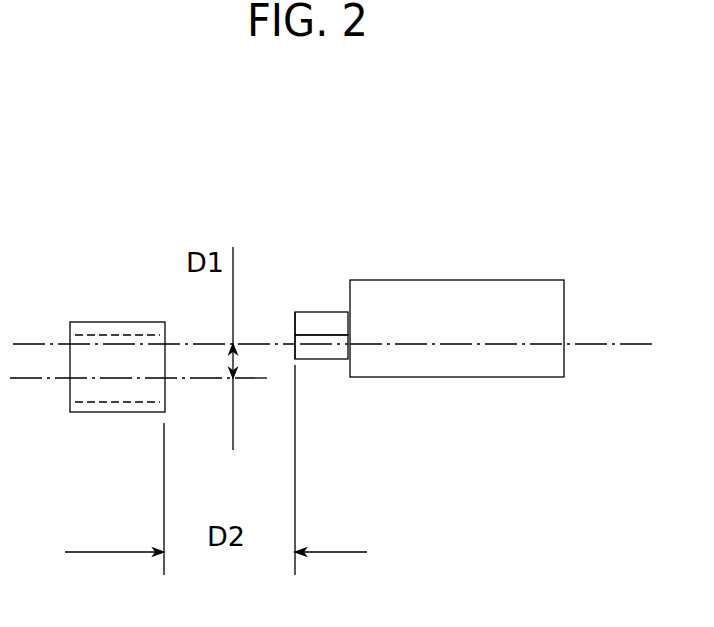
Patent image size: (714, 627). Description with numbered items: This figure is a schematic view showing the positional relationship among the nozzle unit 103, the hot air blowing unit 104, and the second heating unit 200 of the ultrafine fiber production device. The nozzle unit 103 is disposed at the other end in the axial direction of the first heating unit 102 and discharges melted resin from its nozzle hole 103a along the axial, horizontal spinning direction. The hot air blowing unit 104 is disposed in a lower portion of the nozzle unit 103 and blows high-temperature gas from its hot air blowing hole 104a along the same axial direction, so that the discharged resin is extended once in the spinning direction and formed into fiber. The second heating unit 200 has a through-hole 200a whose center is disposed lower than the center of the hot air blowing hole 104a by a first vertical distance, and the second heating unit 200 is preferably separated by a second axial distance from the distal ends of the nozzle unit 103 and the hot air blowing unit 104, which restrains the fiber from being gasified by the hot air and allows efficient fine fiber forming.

The second heating unit 200 is at (115, 321).
The through-hole 200a is at (108, 400).
The nozzle unit 103 is at (322, 318).
The nozzle hole 103a is at (295, 317).
The hot air blowing unit 104 is at (332, 353).
The hot air blowing hole 104a is at (293, 352).
The first heating unit 102 is at (462, 300).